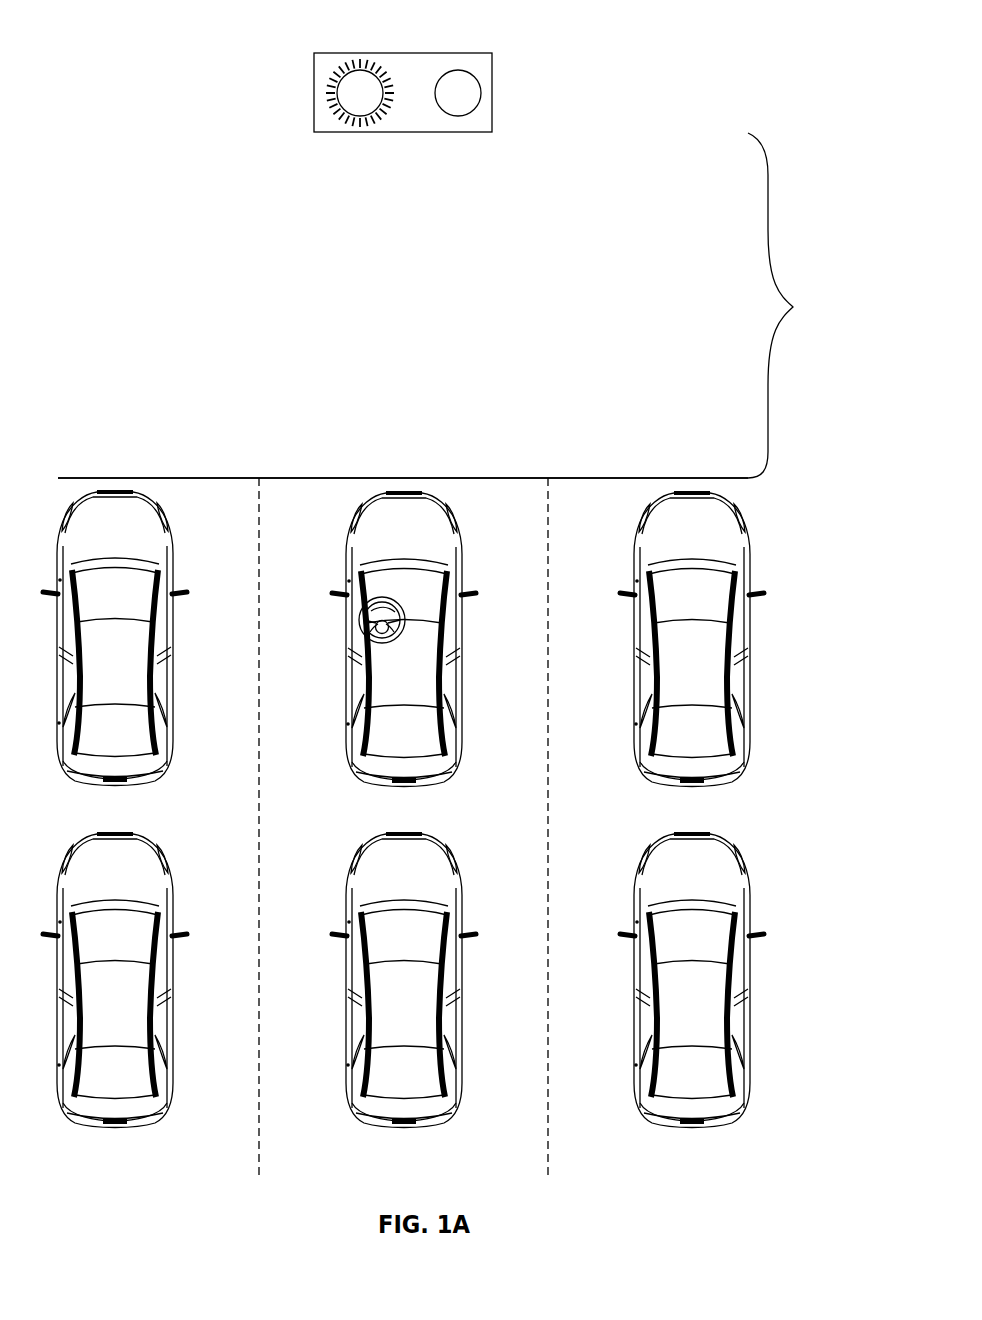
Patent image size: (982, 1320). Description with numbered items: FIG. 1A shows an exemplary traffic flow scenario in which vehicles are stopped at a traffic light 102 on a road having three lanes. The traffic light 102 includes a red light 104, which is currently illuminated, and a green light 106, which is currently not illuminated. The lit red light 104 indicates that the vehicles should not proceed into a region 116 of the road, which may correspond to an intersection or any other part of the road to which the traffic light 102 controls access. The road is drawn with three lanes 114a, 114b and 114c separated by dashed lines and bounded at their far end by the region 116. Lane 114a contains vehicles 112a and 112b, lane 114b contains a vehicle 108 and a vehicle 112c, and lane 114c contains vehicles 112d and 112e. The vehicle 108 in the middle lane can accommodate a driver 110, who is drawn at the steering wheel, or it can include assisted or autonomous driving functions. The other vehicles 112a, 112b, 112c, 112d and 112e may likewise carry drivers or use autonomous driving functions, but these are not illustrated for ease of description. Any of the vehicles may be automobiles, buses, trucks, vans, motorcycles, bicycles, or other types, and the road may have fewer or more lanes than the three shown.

The traffic light 102 is at (492, 84).
The red light 104 is at (365, 64).
The green light 106 is at (458, 68).
The vehicle 108 is at (462, 688).
The driver 110 is at (359, 618).
The vehicle 112a is at (173, 562).
The vehicle 112b is at (173, 901).
The vehicle 112c is at (462, 961).
The vehicle 112d is at (750, 623).
The vehicle 112e is at (750, 961).
The lane 114a is at (127, 471).
The lane 114b is at (399, 471).
The lane 114c is at (696, 471).
The region 116 is at (446, 305).